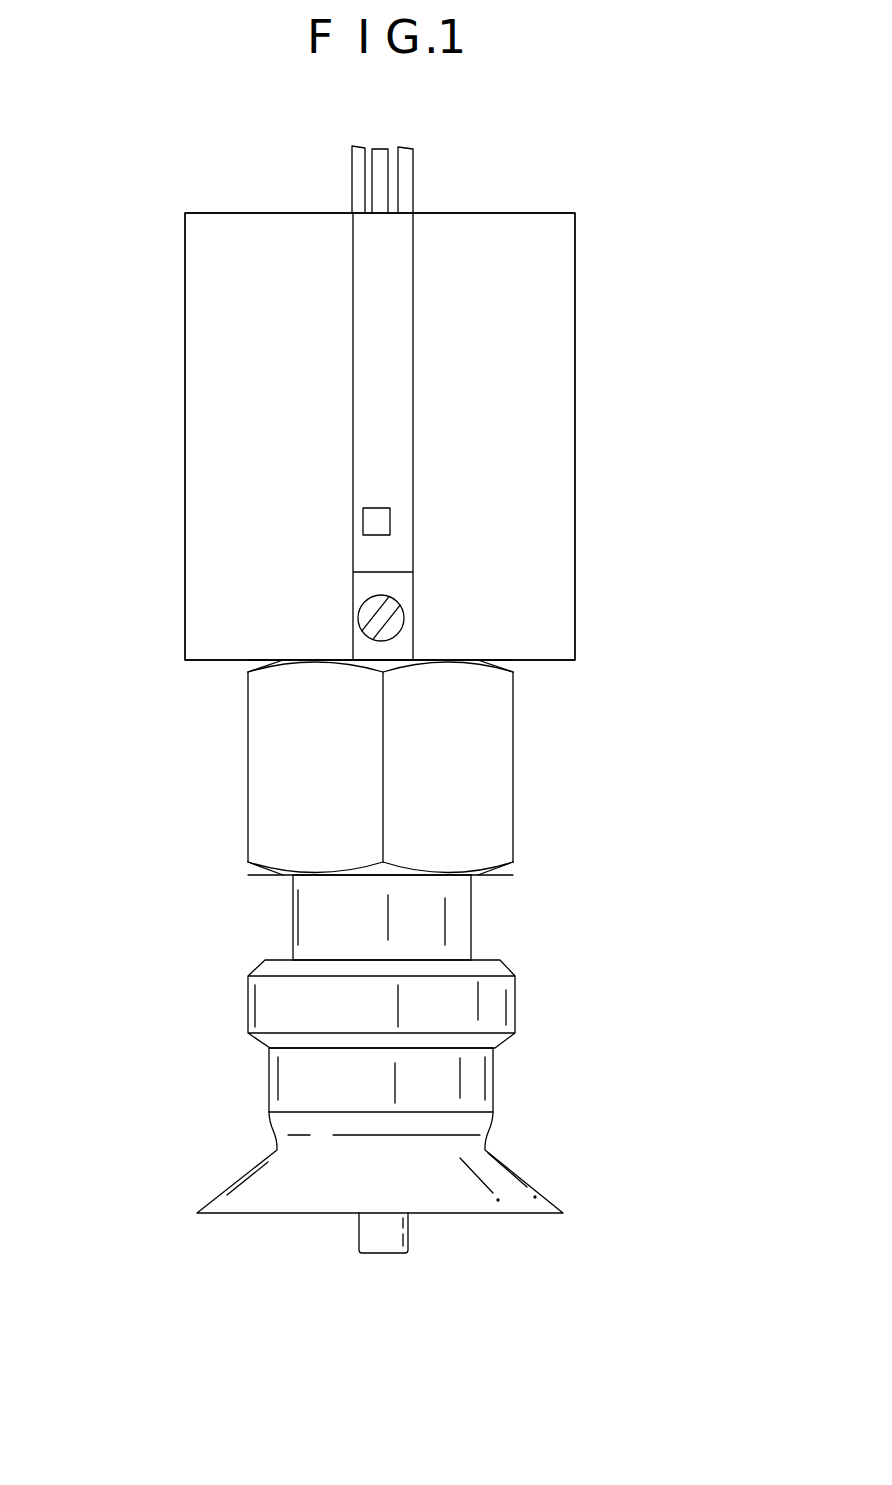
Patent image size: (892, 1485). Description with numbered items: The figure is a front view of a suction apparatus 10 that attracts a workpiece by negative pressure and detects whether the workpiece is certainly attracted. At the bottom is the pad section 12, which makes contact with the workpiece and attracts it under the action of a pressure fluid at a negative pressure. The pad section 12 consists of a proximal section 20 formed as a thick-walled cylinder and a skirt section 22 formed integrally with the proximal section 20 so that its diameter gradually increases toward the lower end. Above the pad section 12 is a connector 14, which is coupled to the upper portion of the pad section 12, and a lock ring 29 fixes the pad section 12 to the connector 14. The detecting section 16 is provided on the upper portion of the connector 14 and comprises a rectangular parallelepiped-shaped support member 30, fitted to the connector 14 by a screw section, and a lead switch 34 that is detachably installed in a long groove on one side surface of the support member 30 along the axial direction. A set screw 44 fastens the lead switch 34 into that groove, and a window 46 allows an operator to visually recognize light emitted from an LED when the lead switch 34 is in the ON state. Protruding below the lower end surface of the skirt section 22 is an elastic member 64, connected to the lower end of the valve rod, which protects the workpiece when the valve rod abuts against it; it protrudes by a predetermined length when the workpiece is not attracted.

The suction apparatus 10 is at (647, 117).
The pad section 12 is at (513, 1086).
The connector 14 is at (490, 795).
The detecting section 16 is at (593, 446).
The proximal section 20 is at (293, 1083).
The skirt section 22 is at (236, 1202).
The lock ring 29 is at (490, 1008).
The support member 30 is at (543, 262).
The lead switch 34 is at (393, 353).
The set screw 44 is at (385, 625).
The window 46 is at (381, 525).
The elastic member 64 is at (383, 1243).